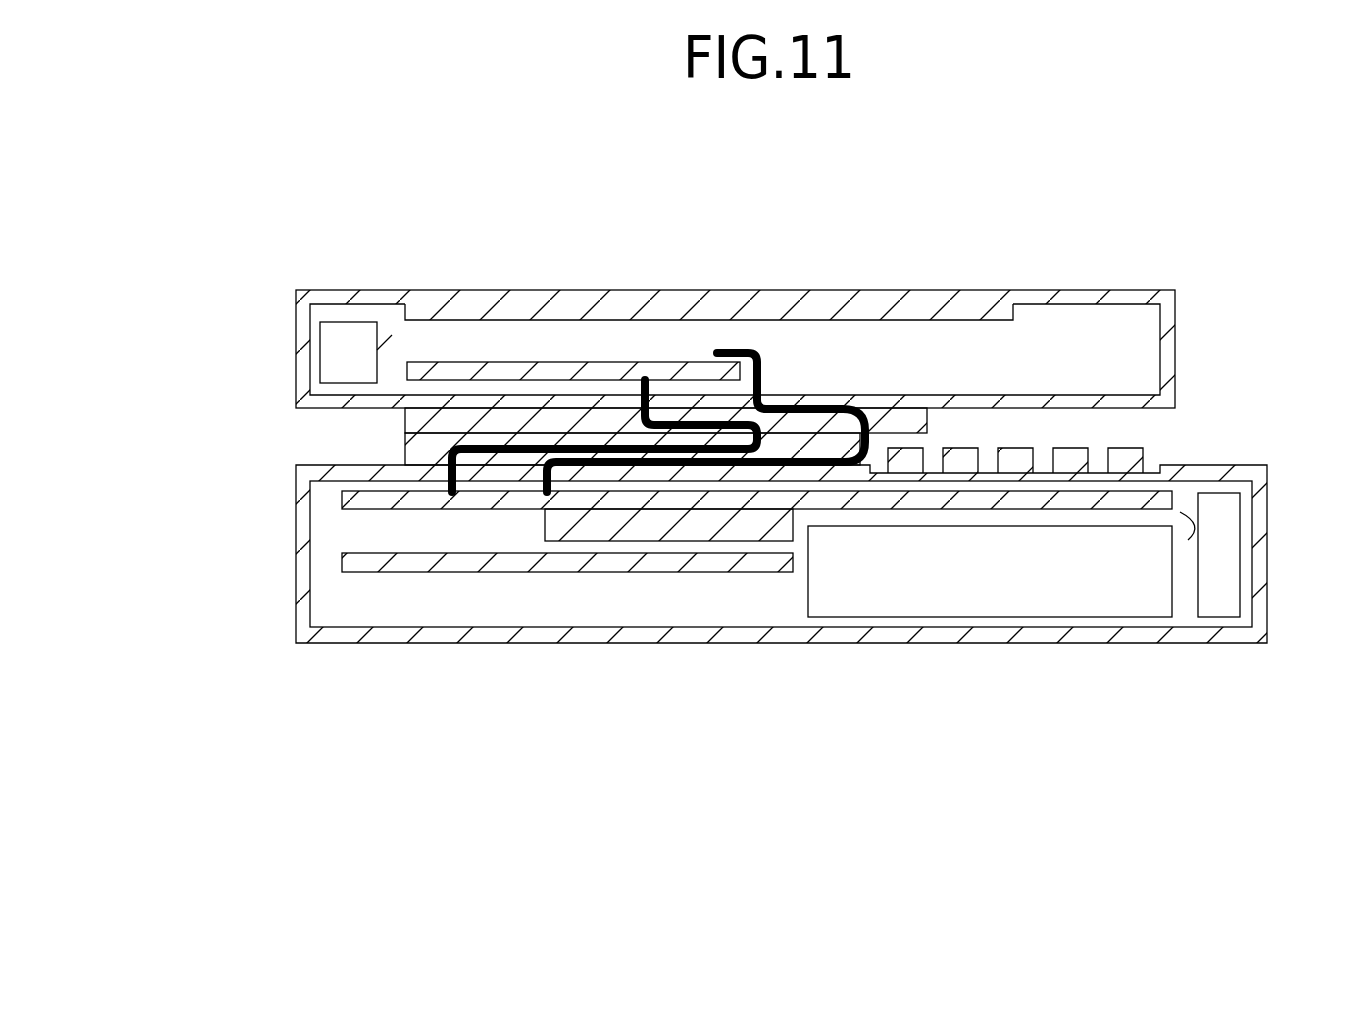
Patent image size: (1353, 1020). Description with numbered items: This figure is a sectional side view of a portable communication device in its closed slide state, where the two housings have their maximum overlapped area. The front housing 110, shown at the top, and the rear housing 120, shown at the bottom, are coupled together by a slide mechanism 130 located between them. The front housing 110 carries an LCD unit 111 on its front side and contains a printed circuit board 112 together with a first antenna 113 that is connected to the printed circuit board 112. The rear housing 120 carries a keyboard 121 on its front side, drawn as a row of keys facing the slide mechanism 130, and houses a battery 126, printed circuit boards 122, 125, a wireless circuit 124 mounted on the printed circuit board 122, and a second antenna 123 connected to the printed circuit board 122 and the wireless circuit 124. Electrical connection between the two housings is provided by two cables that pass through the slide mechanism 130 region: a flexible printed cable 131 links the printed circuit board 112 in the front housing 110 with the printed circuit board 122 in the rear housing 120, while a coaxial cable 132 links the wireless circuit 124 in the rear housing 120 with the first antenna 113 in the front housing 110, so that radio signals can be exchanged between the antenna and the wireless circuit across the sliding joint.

The front housing 110 is at (376, 290).
The LCD unit 111 is at (995, 290).
The printed circuit board 112 is at (527, 362).
The first antenna 113 is at (333, 357).
The rear housing 120 is at (293, 610).
The keyboard 121 is at (1130, 448).
The printed circuit board 122 is at (353, 500).
The second antenna 123 is at (1225, 588).
The wireless circuit 124 is at (640, 525).
The printed circuit board 125 is at (472, 573).
The battery 126 is at (1012, 585).
The slide mechanism 130 is at (395, 448).
The flexible printed cable 131 is at (753, 352).
The coaxial cable 132 is at (728, 350).